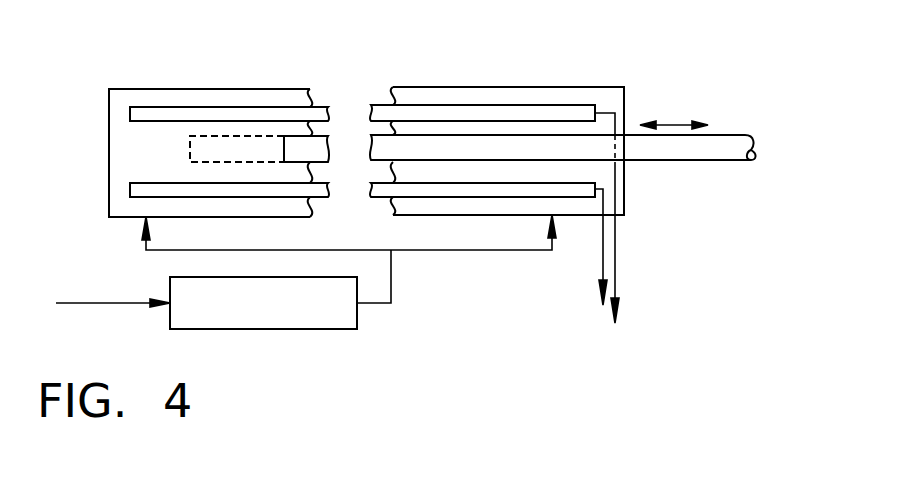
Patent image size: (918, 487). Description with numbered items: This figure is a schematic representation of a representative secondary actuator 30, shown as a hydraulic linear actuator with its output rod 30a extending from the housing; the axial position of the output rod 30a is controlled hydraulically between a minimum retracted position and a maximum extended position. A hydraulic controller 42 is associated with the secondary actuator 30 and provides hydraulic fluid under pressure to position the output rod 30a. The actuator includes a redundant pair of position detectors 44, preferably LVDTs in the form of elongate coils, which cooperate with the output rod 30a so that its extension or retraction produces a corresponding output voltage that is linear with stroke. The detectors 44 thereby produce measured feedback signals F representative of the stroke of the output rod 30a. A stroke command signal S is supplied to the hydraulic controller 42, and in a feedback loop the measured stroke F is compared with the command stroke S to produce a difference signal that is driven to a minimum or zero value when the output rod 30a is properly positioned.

The secondary actuator 30 is at (503, 82).
The output rod 30a is at (735, 134).
The position detectors 44 is at (172, 107).
The hydraulic controller 42 is at (282, 317).
The stroke command signal S is at (88, 303).
The measured feedback signal F is at (605, 272).